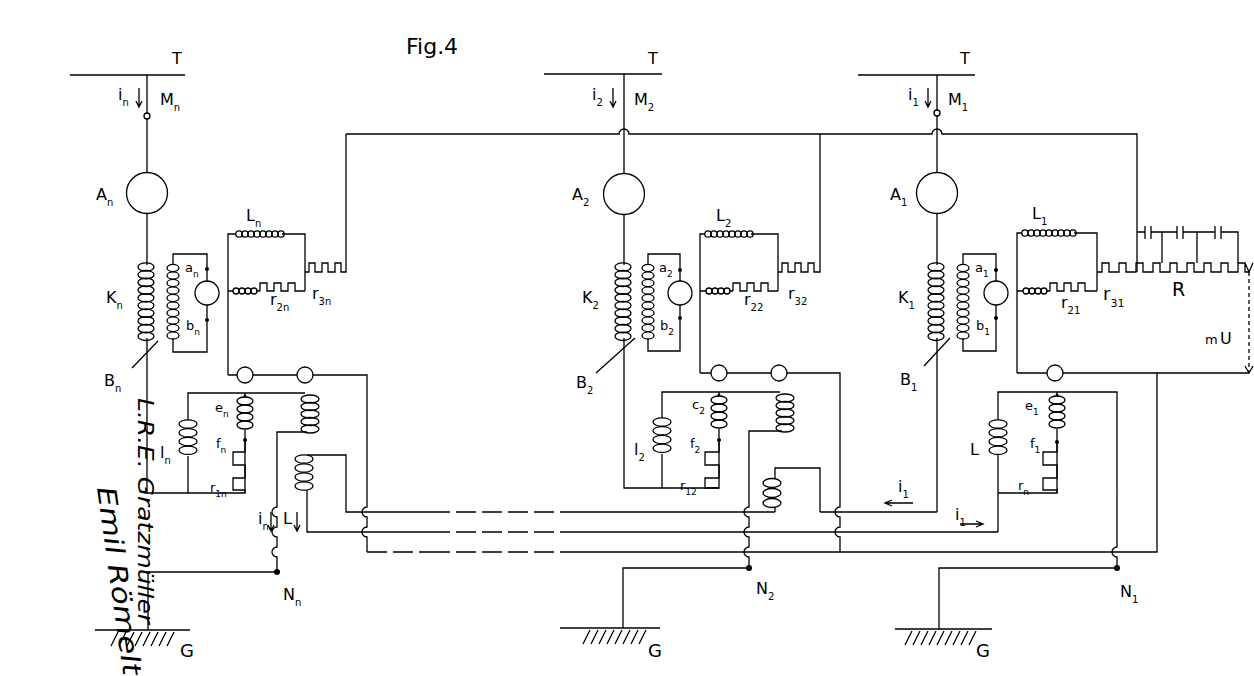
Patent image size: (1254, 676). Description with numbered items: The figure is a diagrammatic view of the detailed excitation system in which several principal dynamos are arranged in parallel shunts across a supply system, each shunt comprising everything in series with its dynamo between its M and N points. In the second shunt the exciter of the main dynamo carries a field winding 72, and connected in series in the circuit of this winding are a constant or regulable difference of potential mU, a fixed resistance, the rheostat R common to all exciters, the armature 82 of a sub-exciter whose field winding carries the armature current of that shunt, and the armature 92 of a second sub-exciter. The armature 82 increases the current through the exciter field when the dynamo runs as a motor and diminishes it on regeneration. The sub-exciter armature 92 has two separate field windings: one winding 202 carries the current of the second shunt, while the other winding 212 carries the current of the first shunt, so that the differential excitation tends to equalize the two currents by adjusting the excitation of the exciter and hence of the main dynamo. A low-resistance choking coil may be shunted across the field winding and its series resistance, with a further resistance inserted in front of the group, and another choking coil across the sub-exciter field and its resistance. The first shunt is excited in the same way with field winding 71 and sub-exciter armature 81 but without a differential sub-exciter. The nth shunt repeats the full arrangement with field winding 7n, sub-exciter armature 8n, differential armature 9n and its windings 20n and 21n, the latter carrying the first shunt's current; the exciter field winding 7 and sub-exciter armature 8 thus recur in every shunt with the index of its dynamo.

The field winding 7n is at (244, 303).
The field winding 72 is at (716, 303).
The field winding 71 is at (1035, 298).
The exciter field winding 7 is at (1033, 309).
The sub-exciter armature 8n is at (246, 363).
The sub-exciter armature 82 is at (720, 361).
The sub-exciter armature 81 is at (1055, 361).
The sub-exciter armature 8 is at (1055, 361).
The differentially excited sub-exciter armature 9n is at (306, 363).
The differentially excited sub-exciter armature 92 is at (780, 361).
The field winding 20n is at (318, 408).
The field winding 202 is at (792, 417).
The field winding 21n is at (318, 473).
The field winding 212 is at (783, 497).